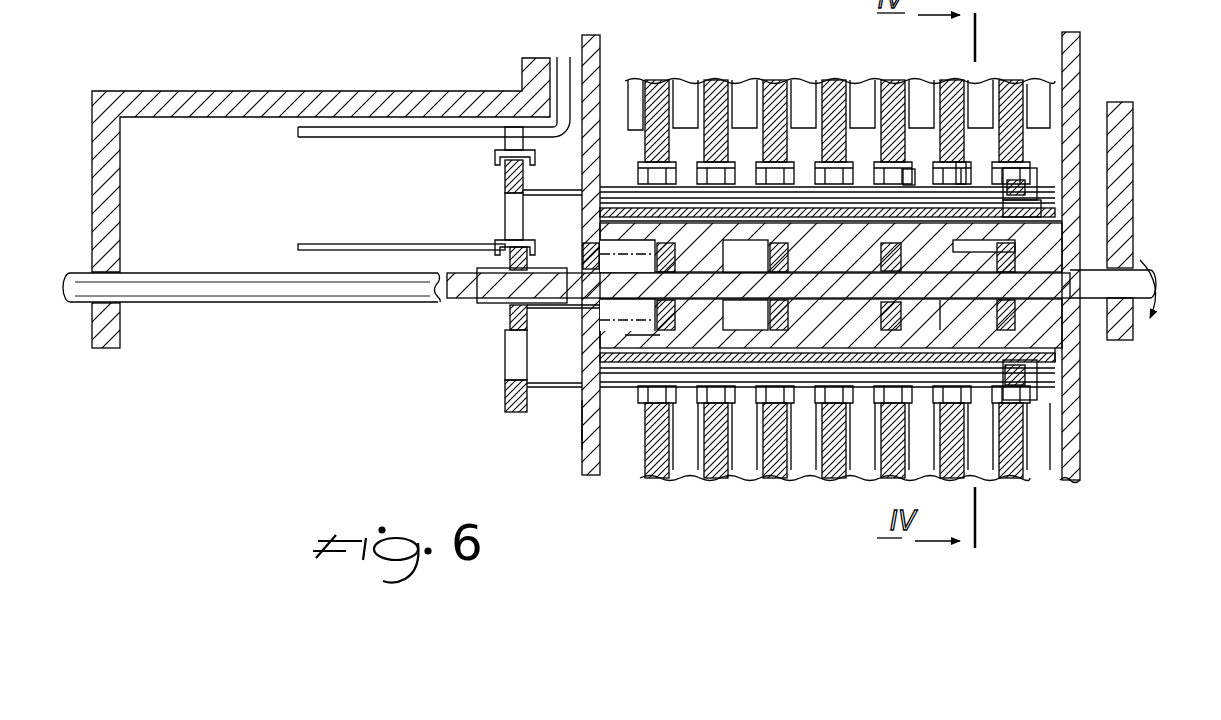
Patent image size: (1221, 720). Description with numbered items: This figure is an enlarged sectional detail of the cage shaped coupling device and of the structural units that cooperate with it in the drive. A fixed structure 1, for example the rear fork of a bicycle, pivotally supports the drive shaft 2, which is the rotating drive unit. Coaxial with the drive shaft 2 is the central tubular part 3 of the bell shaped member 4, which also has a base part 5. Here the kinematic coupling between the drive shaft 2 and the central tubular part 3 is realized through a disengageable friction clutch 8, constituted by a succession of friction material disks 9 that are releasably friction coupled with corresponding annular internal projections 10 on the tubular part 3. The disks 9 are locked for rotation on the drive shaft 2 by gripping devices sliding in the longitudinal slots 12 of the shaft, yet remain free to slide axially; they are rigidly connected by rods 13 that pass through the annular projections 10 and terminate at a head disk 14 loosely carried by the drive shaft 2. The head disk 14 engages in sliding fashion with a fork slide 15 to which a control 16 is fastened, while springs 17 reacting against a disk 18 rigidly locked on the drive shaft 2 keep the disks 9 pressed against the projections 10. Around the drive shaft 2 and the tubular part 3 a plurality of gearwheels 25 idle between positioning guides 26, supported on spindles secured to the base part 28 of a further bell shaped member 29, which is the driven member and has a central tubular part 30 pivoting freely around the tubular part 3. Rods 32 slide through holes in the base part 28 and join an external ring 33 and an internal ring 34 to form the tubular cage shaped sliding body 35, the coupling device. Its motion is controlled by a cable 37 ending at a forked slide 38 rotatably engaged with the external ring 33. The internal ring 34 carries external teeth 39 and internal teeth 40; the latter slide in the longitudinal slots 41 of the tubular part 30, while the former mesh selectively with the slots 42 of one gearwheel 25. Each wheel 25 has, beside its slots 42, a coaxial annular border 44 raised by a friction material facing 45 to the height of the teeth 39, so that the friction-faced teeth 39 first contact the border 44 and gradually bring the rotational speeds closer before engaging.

The fixed structure 1 is at (180, 105).
The drive shaft 2 is at (238, 290).
The central tubular part 3 is at (637, 338).
The bell shaped member 4 is at (1079, 477).
The base part 5 is at (1072, 67).
The disengageable friction clutch 8 is at (1003, 332).
The friction material disks 9 is at (1040, 233).
The annular internal projections 10 is at (688, 96).
The longitudinal slots 12 is at (940, 300).
The rods 13 is at (580, 250).
The head disk 14 is at (510, 322).
The fork slide 15 is at (512, 241).
The control 16 is at (355, 244).
The springs 17 is at (600, 344).
The disk 18 is at (588, 252).
The gearwheels 25 is at (838, 90).
The positioning guides 26 is at (636, 84).
The base part 28 is at (590, 472).
The bell shaped member 29 is at (594, 421).
The central tubular part 30 is at (1056, 354).
The rods 32 is at (572, 160).
The external ring 33 is at (505, 399).
The internal ring 34 is at (1030, 383).
The cage shaped sliding body 35 is at (522, 186).
The cable 37 is at (330, 136).
The forked slide 38 is at (497, 157).
The external teeth 39 is at (1040, 172).
The internal teeth 40 is at (1133, 129).
The longitudinal slots 41 is at (748, 220).
The slots 42 is at (963, 176).
The coaxial annular border 44 is at (590, 441).
The friction material facing 45 is at (632, 190).